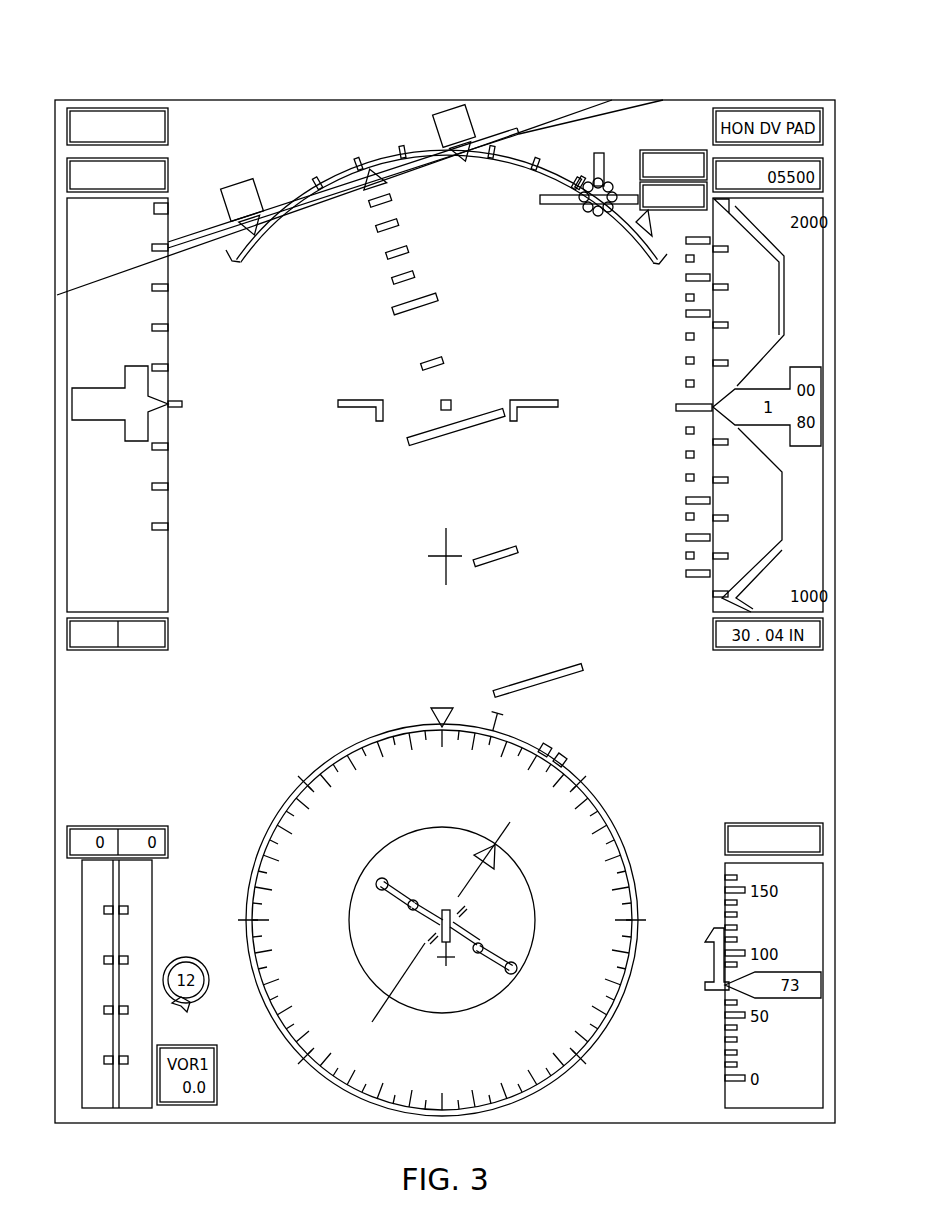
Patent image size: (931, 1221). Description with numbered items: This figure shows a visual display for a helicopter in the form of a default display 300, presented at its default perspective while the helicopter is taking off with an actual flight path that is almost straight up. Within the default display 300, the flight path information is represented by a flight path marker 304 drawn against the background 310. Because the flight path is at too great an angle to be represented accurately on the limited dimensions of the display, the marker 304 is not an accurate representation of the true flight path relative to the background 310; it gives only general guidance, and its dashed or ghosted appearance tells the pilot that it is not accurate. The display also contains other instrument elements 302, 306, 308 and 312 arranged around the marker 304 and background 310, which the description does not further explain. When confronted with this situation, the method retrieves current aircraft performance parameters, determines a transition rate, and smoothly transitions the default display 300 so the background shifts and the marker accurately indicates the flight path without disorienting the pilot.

The default display 300 is at (520, 88).
The horizon line with heading indicator 302 is at (218, 212).
The flight path marker 304 is at (598, 152).
The airspeed tape 306 is at (168, 342).
The vertical speed indicator 308 is at (708, 350).
The background 310 is at (435, 195).
The compass rose navigation display 312 is at (602, 1036).